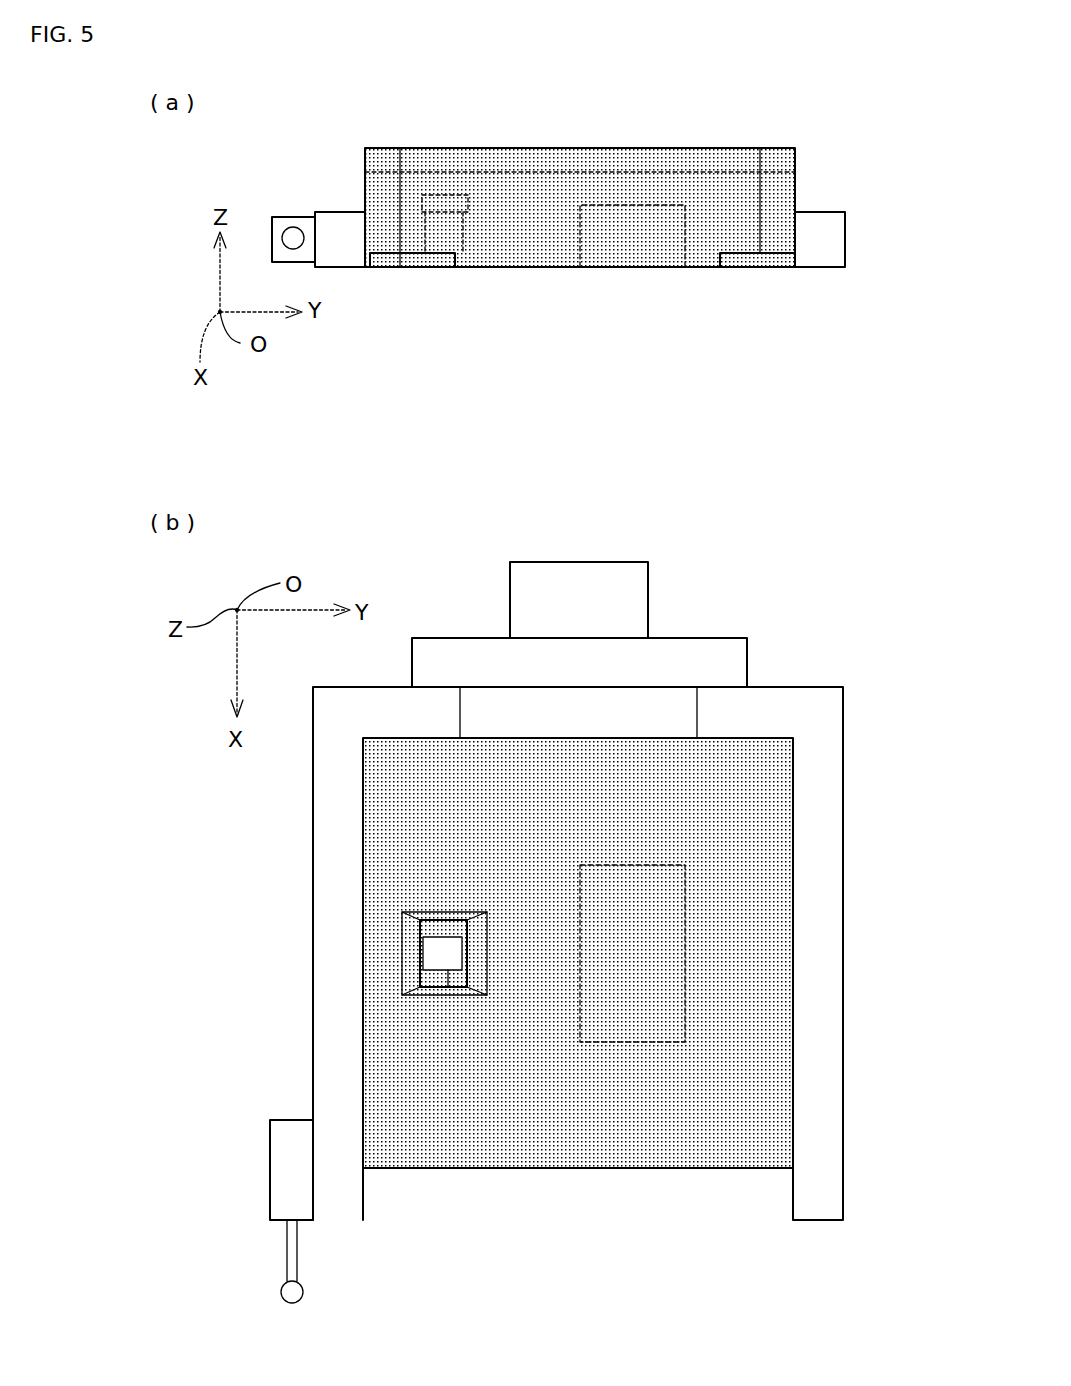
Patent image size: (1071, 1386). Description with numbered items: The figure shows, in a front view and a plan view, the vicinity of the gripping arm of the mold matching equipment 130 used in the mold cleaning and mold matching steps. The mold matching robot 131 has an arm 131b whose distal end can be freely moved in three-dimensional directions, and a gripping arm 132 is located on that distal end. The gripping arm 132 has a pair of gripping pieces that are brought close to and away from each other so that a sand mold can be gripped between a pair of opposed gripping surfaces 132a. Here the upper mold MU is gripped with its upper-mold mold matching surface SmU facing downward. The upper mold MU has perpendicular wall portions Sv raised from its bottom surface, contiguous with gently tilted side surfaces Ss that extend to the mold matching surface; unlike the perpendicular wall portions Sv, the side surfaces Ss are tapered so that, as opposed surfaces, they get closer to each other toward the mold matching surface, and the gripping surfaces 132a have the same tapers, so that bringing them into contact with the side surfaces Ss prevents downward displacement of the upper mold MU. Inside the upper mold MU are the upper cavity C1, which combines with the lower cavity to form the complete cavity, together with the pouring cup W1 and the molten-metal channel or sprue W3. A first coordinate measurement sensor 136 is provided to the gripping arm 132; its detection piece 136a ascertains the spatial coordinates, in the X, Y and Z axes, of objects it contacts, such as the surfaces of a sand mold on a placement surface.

The mold matching equipment 130 is at (782, 50).
The mold matching robot 131 is at (850, 240).
The arm 131b is at (620, 560).
The gripping arm 132 is at (827, 212).
The gripping surfaces 132a is at (372, 232).
The first coordinate measurement sensor 136 is at (294, 210).
The detection piece 136a is at (303, 1290).
The upper mold MU is at (652, 145).
The perpendicular wall portions Sv is at (798, 162).
The side surfaces Ss is at (798, 183).
The upper-mold mold matching surface SmU is at (520, 271).
The pouring cup W1 is at (468, 205).
The molten-metal channel (sprue) W3 is at (467, 240).
The upper cavity C1 is at (678, 237).